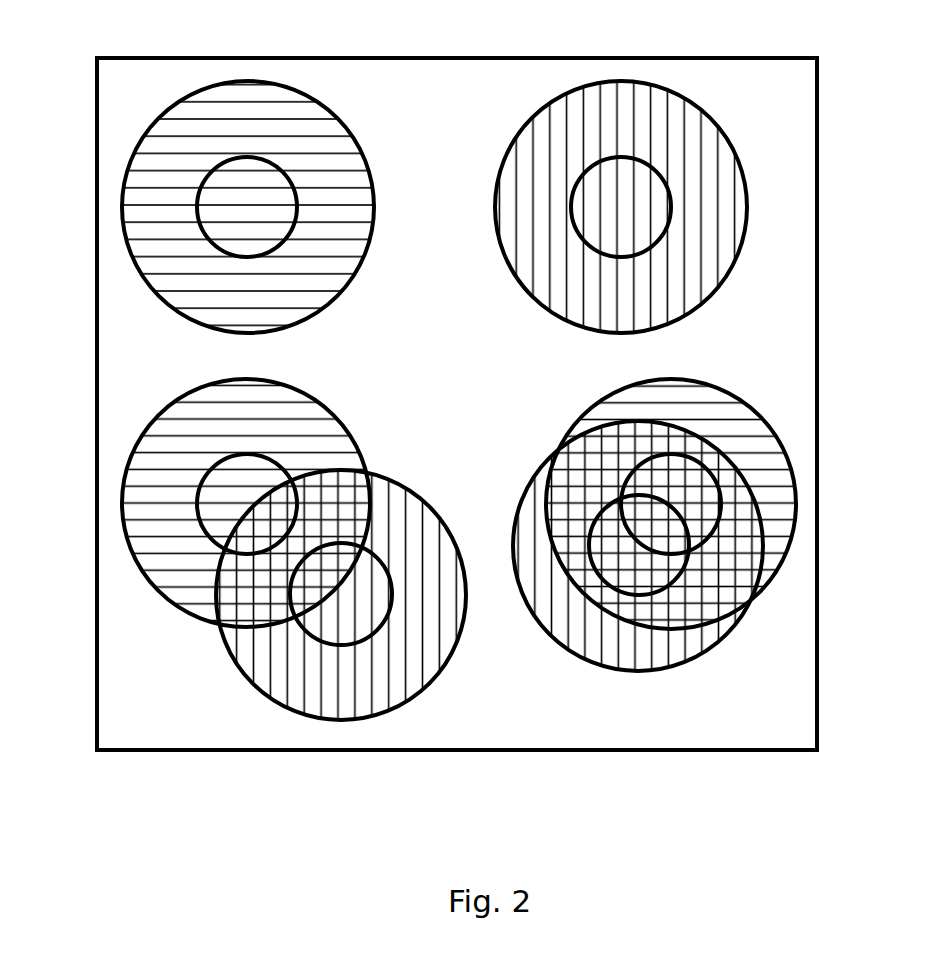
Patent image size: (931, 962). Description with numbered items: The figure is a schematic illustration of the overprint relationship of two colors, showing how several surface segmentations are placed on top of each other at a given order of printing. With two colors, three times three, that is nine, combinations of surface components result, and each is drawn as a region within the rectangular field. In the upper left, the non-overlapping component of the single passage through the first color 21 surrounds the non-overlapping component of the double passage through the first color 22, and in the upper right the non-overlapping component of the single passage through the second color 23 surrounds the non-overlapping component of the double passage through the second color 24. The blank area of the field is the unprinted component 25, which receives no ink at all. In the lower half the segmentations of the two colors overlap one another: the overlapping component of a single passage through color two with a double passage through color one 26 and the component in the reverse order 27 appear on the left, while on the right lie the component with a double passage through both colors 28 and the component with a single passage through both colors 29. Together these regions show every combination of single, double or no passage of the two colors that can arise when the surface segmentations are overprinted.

The non-overlapping component of the single passage through the first color 21 is at (183, 143).
The non-overlapping component of the double passage through the first color 22 is at (265, 207).
The non-overlapping component of the single passage through the second color 23 is at (570, 143).
The non-overlapping component of the double passage through the second color 24 is at (617, 207).
The unprinted component 25 is at (787, 170).
The overlapping component of single passage through color 2 with double passage thro 26 is at (263, 540).
The overlapping component of single passage through color 1 with double passage thro 27 is at (320, 580).
The overlapping component of double passage through both colors 28 is at (650, 530).
The overlapping component of single passage through both colors 29 is at (697, 575).